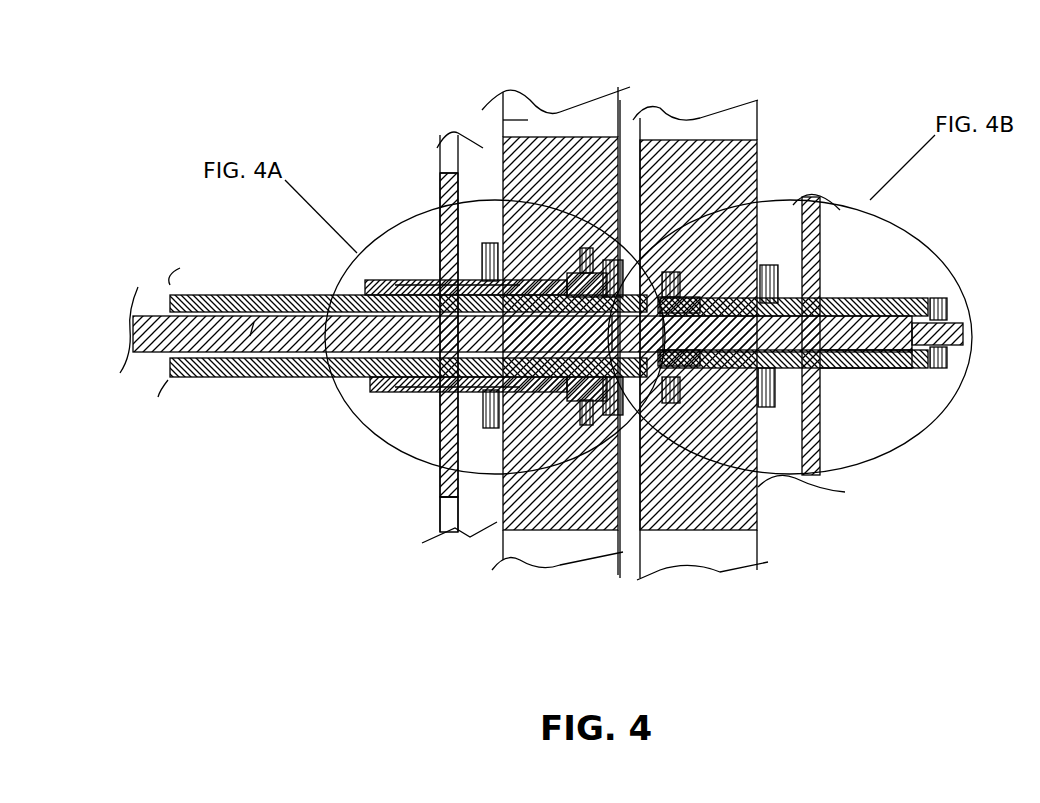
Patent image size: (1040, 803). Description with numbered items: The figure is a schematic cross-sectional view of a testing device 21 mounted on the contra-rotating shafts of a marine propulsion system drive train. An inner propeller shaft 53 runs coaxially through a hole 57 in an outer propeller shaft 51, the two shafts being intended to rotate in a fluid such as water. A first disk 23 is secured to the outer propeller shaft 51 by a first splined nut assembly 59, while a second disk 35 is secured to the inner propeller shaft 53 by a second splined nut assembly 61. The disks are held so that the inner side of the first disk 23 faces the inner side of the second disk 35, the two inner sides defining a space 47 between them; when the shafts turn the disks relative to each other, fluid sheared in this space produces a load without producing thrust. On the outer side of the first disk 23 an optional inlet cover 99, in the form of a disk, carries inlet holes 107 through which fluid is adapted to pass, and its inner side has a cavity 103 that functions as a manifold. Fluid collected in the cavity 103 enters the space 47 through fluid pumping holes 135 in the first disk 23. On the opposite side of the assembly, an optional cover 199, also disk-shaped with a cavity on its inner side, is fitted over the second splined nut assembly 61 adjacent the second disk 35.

The testing device 21 is at (622, 603).
The first disk 23 is at (556, 128).
The second disk 35 is at (700, 150).
The space 47 is at (627, 156).
The outer propeller shaft 51 is at (207, 293).
The inner propeller shaft 53 is at (158, 315).
The hole 57 is at (252, 328).
The first splined nut assembly 59 is at (410, 388).
The second splined nut assembly 61 is at (882, 372).
The inlet cover 99 is at (437, 438).
The cavity 103 is at (477, 498).
The inlet holes 107 is at (447, 157).
The fluid pumping holes 135 is at (528, 120).
The cover 199 is at (822, 433).